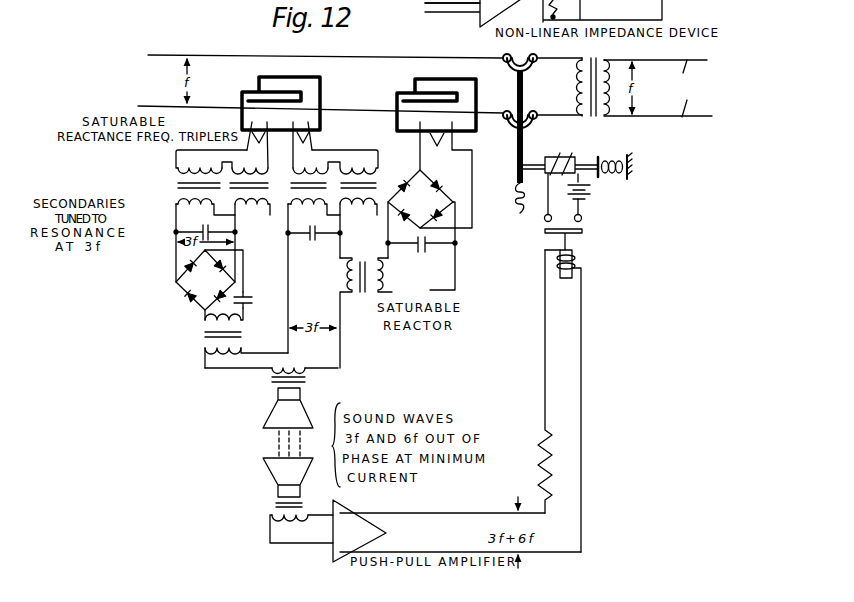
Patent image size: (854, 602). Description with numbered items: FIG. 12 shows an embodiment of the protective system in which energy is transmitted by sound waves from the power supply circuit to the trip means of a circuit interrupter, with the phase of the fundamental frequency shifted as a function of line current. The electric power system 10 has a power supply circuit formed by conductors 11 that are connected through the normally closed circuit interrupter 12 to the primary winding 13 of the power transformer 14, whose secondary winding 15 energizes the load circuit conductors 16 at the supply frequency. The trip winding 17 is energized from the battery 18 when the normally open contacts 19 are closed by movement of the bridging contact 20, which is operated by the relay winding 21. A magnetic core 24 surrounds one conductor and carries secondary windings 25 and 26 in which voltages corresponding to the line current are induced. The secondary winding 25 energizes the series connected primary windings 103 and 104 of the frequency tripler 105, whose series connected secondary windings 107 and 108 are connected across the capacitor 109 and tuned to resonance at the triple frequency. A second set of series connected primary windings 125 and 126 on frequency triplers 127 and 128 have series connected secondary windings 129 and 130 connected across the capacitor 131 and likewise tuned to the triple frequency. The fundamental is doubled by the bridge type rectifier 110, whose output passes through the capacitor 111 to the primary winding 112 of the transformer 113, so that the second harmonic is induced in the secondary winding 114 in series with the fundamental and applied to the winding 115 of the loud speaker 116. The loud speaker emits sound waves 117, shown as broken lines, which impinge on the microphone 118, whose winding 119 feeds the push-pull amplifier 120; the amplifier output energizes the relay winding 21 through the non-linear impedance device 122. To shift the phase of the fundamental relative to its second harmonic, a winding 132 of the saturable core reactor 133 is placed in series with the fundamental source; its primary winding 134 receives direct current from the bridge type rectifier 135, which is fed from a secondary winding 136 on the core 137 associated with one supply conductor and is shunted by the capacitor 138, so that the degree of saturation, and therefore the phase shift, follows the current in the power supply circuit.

The alternating current electric power system 10 is at (421, 53).
The power supply circuit conductors 11 is at (160, 57).
The circuit interrupter 12 is at (539, 123).
The primary winding 13 is at (566, 87).
The power transformer 14 is at (600, 56).
The secondary winding 15 is at (655, 70).
The load circuit conductors 16 is at (658, 88).
The trip winding 17 is at (580, 156).
The battery 18 is at (592, 193).
The normally open contacts 19 is at (557, 226).
The bridging contact 20 is at (584, 233).
The relay winding 21 is at (575, 257).
The magnetic core 24 is at (307, 76).
The secondary winding 25 is at (266, 122).
The secondary winding 26 is at (312, 123).
The primary winding 103 is at (200, 162).
The primary winding 104 is at (251, 160).
The frequency tripler 105 is at (204, 191).
The secondary winding 107 is at (205, 215).
The secondary winding 108 is at (257, 210).
The capacitor 109 is at (222, 237).
The bridge type rectifier 110 is at (162, 287).
The capacitor 111 is at (252, 302).
The primary winding 112 is at (245, 320).
The transformer 113 is at (211, 339).
The secondary winding 114 is at (203, 362).
The loud speaker winding 115 is at (298, 363).
The loud speaker 116 is at (271, 395).
The sound waves 117 is at (277, 443).
The microphone 118 is at (263, 485).
The microphone winding 119 is at (269, 531).
The amplifier 120 is at (343, 508).
The non-linear impedance device 122 is at (552, 447).
The primary winding 125 is at (309, 160).
The primary winding 126 is at (324, 184).
The frequency tripler 127 is at (285, 191).
The frequency tripler 128 is at (385, 180).
The secondary winding 129 is at (314, 214).
The secondary winding 130 is at (358, 219).
The capacitor 131 is at (313, 242).
The winding 132 is at (343, 279).
The saturable core reactor 133 is at (362, 313).
The primary winding 134 is at (383, 278).
The bridge type rectifier 135 is at (444, 180).
The winding 136 is at (429, 122).
The core 137 is at (453, 78).
The capacitor 138 is at (424, 253).